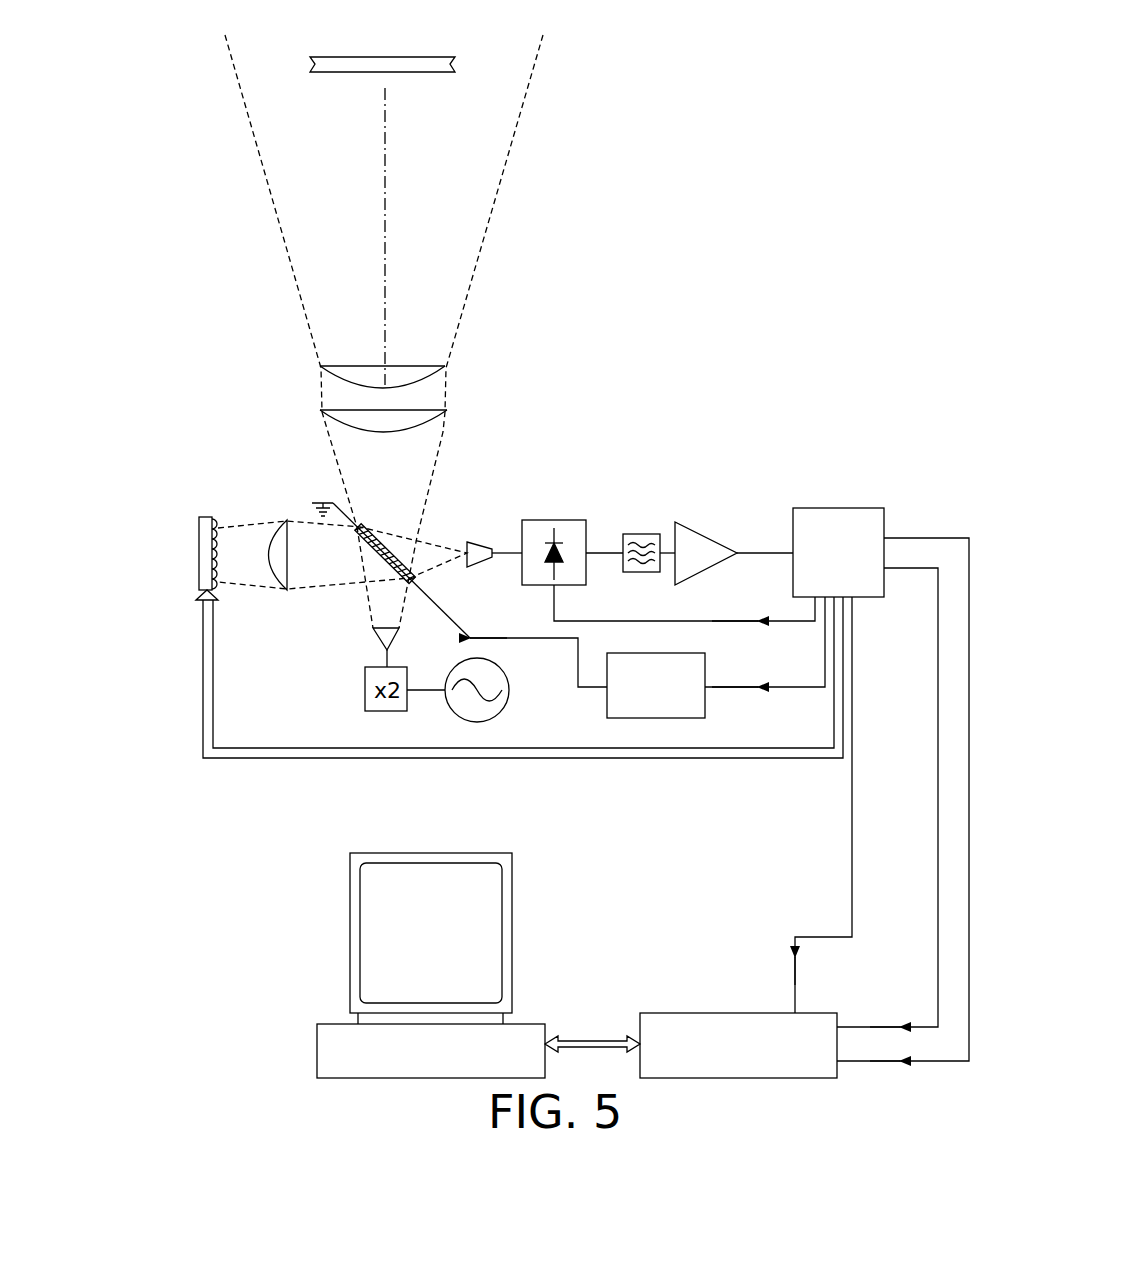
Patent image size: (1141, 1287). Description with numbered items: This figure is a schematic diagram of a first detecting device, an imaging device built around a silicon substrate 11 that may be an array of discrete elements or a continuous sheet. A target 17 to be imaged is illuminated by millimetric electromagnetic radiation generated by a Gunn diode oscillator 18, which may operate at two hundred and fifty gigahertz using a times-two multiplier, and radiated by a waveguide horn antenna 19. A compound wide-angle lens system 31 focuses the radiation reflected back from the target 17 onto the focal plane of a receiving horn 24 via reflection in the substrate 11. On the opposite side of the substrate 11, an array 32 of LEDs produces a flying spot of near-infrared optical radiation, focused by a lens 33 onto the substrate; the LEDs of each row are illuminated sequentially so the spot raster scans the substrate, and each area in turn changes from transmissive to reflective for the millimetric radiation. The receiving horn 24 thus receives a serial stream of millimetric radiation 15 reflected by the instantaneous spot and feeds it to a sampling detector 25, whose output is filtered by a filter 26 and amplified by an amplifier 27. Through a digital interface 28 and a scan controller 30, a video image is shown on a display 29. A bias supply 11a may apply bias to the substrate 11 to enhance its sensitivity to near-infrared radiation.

The target 17 is at (384, 57).
The compound wide-angle lens system 31 is at (462, 366).
The array of LEDs 32 is at (199, 553).
The lens 33 is at (290, 553).
The millimetric radiation 15 is at (442, 564).
The silicon substrate 11 is at (378, 560).
The waveguide horn antenna 19 is at (374, 642).
The receiving horn 24 is at (478, 542).
The sampling detector 25 is at (551, 520).
The filter 26 is at (636, 534).
The amplifier 27 is at (704, 534).
The scan controller 30 is at (834, 508).
The Gunn diode oscillator 18 is at (510, 688).
The bias supply 11a is at (705, 707).
The display 29 is at (513, 858).
The digital interface 28 is at (740, 1012).